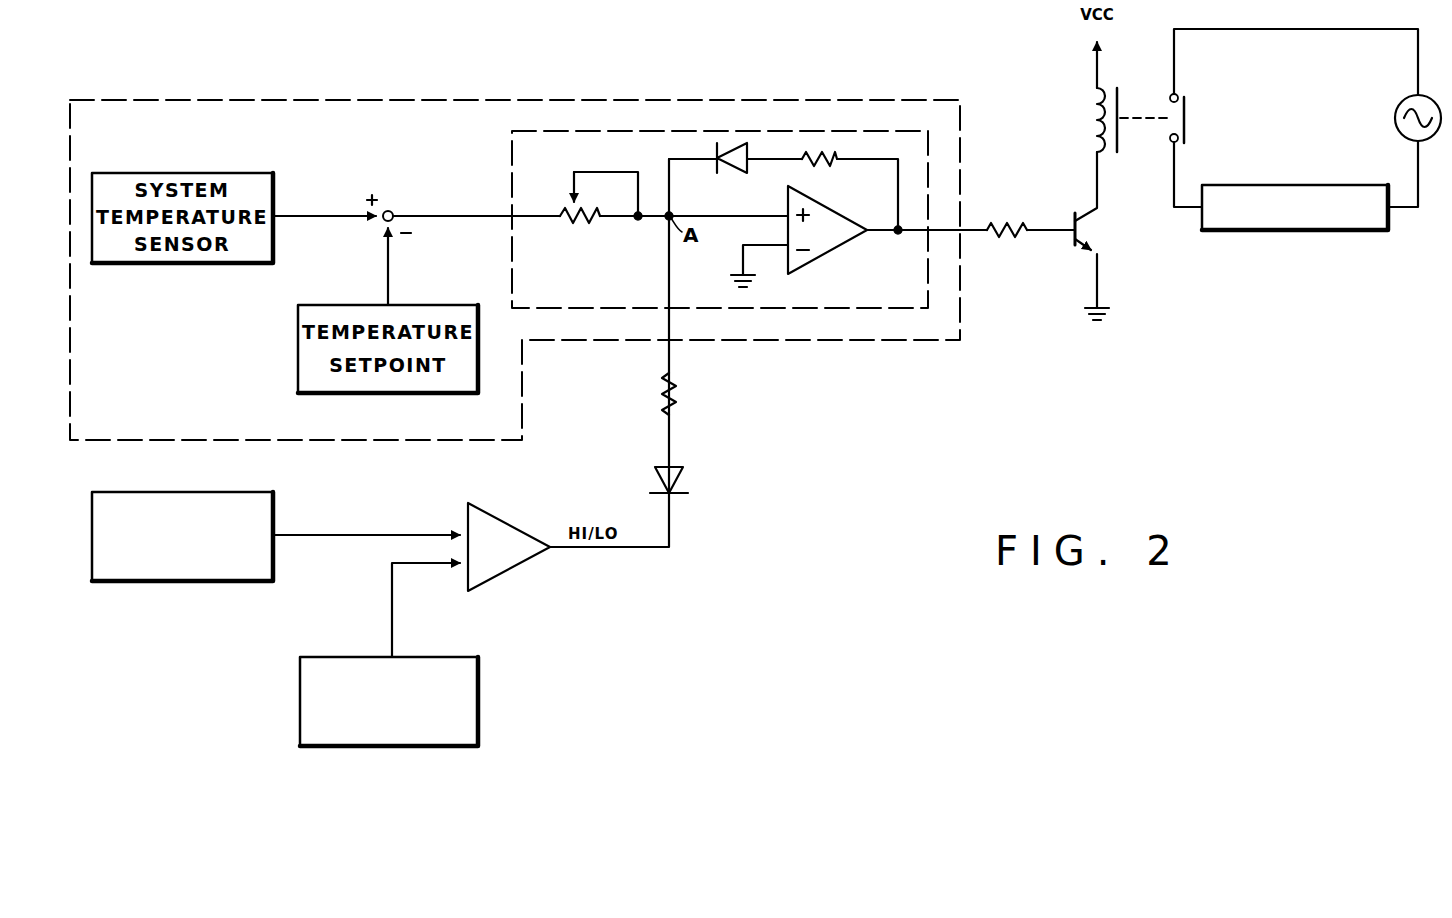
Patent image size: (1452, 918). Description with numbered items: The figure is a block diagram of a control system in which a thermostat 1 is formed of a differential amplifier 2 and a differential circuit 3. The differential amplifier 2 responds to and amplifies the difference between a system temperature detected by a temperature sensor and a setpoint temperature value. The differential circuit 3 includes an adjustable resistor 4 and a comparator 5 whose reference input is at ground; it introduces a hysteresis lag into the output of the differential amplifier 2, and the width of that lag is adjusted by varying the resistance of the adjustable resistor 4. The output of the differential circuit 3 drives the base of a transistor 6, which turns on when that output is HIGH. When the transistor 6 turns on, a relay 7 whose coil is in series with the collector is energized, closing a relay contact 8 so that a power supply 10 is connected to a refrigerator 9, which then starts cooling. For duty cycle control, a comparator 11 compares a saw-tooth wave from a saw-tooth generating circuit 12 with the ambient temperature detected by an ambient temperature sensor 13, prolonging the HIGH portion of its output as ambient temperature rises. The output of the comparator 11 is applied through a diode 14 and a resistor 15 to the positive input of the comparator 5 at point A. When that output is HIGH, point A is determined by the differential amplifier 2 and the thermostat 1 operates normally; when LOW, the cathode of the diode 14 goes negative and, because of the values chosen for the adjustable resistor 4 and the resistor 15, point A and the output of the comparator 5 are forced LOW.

The thermostat 1 is at (400, 99).
The differential amplifier 2 is at (388, 211).
The differential circuit 3 is at (511, 131).
The adjustable resistor 4 is at (575, 222).
The comparator 5 is at (828, 208).
The transistor 6 is at (1098, 234).
The relay 7 is at (1118, 100).
The relay contact 8 is at (1187, 114).
The refrigerator 9 is at (1360, 231).
The power supply 10 is at (1431, 100).
The comparator 11 is at (533, 557).
The saw-tooth generating circuit 12 is at (440, 656).
The ambient temperature sensor 13 is at (220, 581).
The diode 14 is at (684, 478).
The resistor 15 is at (676, 391).